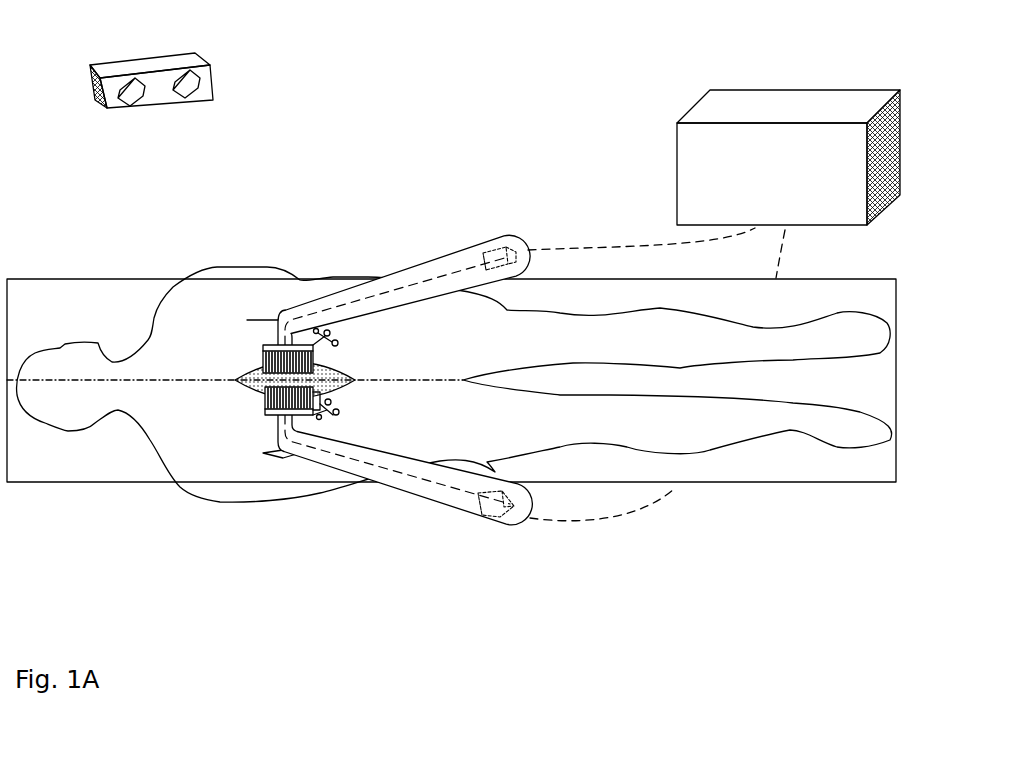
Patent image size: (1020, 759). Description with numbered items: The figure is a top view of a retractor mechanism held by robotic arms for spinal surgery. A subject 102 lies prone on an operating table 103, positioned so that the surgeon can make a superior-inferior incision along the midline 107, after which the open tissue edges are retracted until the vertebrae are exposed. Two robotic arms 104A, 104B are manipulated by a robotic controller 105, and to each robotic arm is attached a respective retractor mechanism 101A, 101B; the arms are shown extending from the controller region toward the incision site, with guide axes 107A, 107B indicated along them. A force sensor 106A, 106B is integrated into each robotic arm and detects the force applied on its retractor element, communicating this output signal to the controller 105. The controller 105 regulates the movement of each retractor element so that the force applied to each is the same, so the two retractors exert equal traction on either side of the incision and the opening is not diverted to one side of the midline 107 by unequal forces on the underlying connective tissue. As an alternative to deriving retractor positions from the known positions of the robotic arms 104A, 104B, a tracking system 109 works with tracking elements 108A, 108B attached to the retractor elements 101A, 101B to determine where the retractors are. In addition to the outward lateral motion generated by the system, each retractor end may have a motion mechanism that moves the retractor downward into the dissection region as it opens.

The retractor mechanism 101A is at (262, 342).
The retractor mechanism 101B is at (265, 413).
The subject 102 is at (150, 452).
The operating table 103 is at (20, 303).
The robotic arm 104A is at (462, 245).
The robotic arm 104B is at (403, 495).
The robotic controller 105 is at (790, 187).
The force sensor 106A is at (500, 245).
The force sensor 106B is at (500, 520).
The midline 107 is at (73, 376).
The first arm axis 107A is at (393, 287).
The second arm axis 107B is at (357, 460).
The tracking element 108A is at (320, 327).
The tracking element 108B is at (330, 412).
The tracking system 109 is at (167, 55).